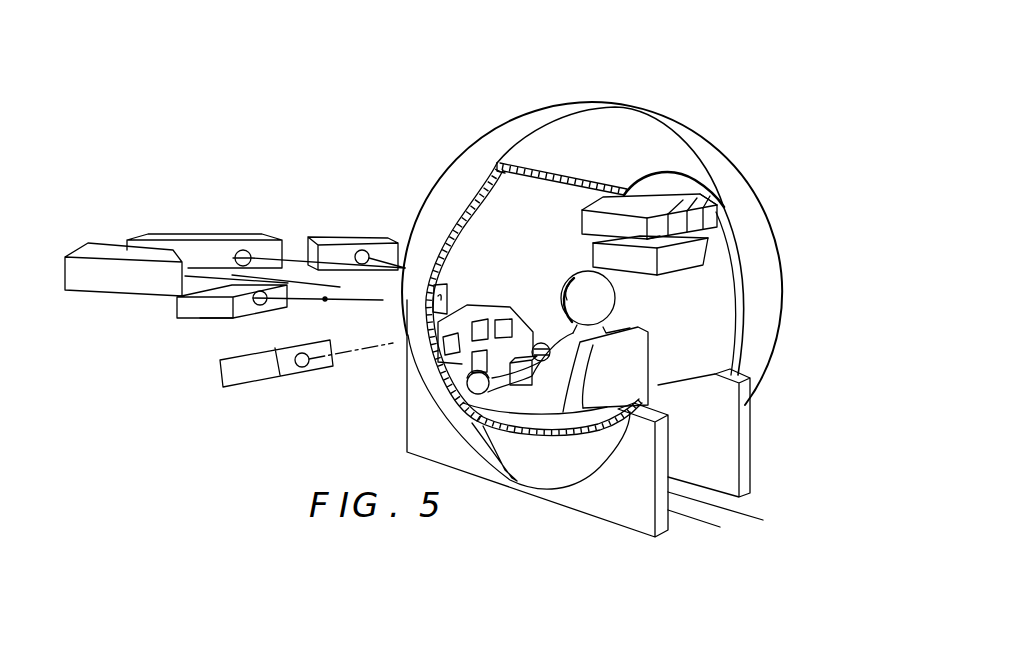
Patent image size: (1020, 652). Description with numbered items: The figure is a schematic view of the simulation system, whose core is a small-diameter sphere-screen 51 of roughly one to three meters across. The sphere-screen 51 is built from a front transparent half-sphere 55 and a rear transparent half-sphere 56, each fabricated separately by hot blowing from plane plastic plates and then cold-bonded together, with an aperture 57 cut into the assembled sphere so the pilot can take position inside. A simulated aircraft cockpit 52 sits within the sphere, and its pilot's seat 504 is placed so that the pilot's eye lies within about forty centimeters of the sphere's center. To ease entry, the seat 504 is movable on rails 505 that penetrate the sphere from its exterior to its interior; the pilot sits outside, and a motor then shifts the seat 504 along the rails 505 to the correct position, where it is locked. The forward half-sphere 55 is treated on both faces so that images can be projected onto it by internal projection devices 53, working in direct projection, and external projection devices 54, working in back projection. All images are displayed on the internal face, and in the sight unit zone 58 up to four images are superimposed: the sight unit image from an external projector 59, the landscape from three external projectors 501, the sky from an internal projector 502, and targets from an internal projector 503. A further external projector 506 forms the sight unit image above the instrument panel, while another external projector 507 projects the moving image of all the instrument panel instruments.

The sphere-screen 51 is at (553, 102).
The simulated aircraft cockpit 52 is at (727, 347).
The internal projection devices 53 is at (680, 200).
The external projection devices 54 is at (183, 401).
The front transparent half-sphere 55 is at (478, 138).
The rear transparent half-sphere 56 is at (640, 122).
The aperture 57 is at (750, 312).
The sight unit zone 58 is at (447, 288).
The external projector 59 is at (178, 313).
The external projectors 501 is at (97, 250).
The internal projector 502 is at (702, 250).
The internal projector 503 is at (717, 218).
The pilot's seat 504 is at (633, 380).
The rails 505 is at (712, 515).
The external projector 506 is at (204, 318).
The external projector 507 is at (268, 386).